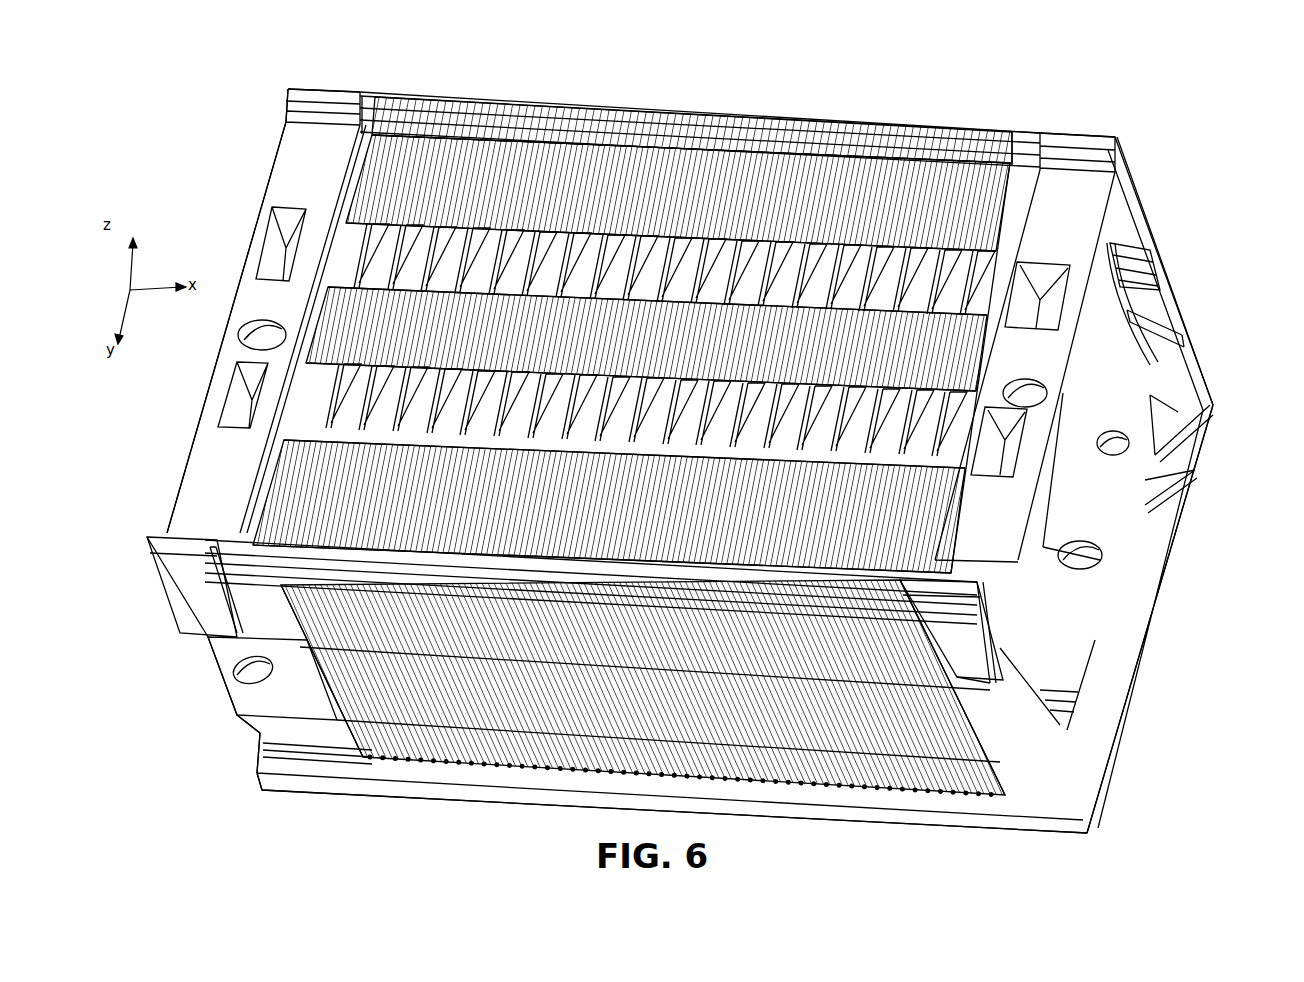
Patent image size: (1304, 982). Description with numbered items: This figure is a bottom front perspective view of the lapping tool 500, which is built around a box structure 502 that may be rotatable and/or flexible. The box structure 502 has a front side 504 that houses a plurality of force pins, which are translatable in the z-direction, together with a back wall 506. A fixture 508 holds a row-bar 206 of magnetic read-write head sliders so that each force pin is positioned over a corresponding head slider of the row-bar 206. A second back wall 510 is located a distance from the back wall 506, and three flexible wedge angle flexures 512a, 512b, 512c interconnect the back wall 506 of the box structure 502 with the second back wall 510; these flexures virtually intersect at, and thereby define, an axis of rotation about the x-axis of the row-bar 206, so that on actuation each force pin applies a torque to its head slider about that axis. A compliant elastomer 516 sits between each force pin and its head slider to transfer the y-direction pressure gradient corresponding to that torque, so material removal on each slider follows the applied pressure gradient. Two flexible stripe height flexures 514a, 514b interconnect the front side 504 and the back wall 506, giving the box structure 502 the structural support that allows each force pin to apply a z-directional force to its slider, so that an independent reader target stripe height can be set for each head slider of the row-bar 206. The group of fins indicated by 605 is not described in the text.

The lapping tool 500 is at (256, 86).
The fin stack 605 is at (1015, 135).
The front side 504 is at (293, 181).
The box structure 502 is at (1165, 293).
The stripe height flexure 514a is at (1130, 356).
The back wall 506 is at (1170, 380).
The wedge angle flexure 512a is at (1178, 418).
The wedge angle flexure 512b is at (1165, 485).
The second back wall 510 is at (1180, 576).
The compliant elastomer 516 is at (218, 538).
The fixture 508 is at (190, 600).
The stripe height flexure 514b is at (1052, 668).
The wedge angle flexure 512c is at (1060, 775).
The row-bar 206 is at (223, 607).